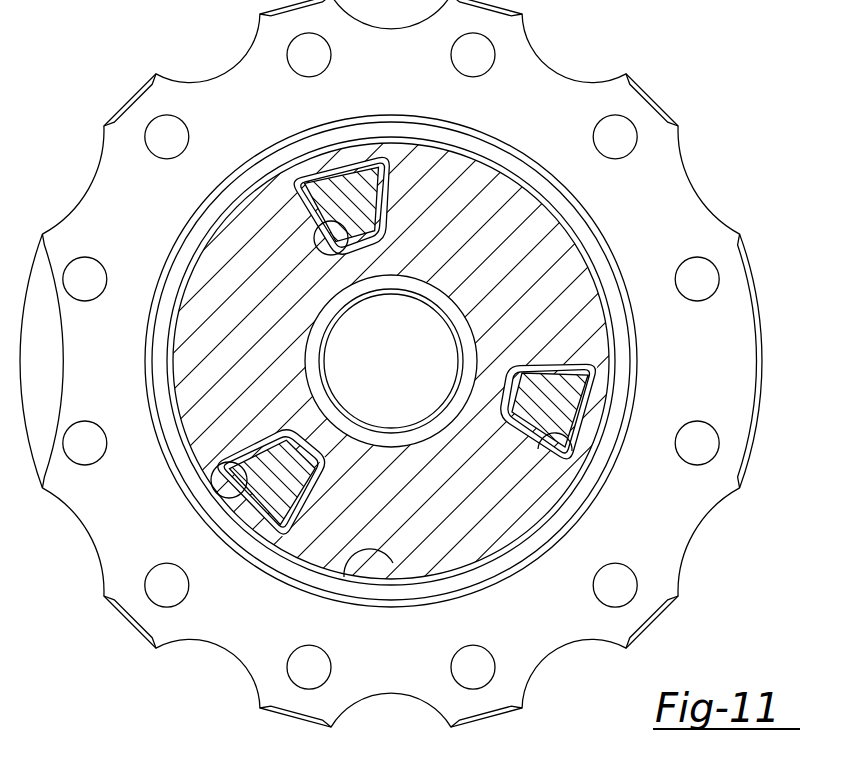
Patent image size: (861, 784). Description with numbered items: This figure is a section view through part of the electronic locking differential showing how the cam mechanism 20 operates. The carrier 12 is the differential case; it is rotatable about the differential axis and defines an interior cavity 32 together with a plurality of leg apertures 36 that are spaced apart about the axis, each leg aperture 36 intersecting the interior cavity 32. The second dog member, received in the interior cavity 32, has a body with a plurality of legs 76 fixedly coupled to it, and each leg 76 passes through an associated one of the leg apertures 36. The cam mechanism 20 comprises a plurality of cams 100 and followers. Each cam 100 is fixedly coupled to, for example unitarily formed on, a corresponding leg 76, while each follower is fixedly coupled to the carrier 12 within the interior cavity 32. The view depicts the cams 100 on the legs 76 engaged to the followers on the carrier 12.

The carrier 12 is at (647, 192).
The cam mechanism 20 is at (396, 189).
The interior cavity 32 is at (393, 563).
The leg apertures 36 is at (318, 173).
The legs 76 is at (337, 200).
The cams 100 is at (335, 255).